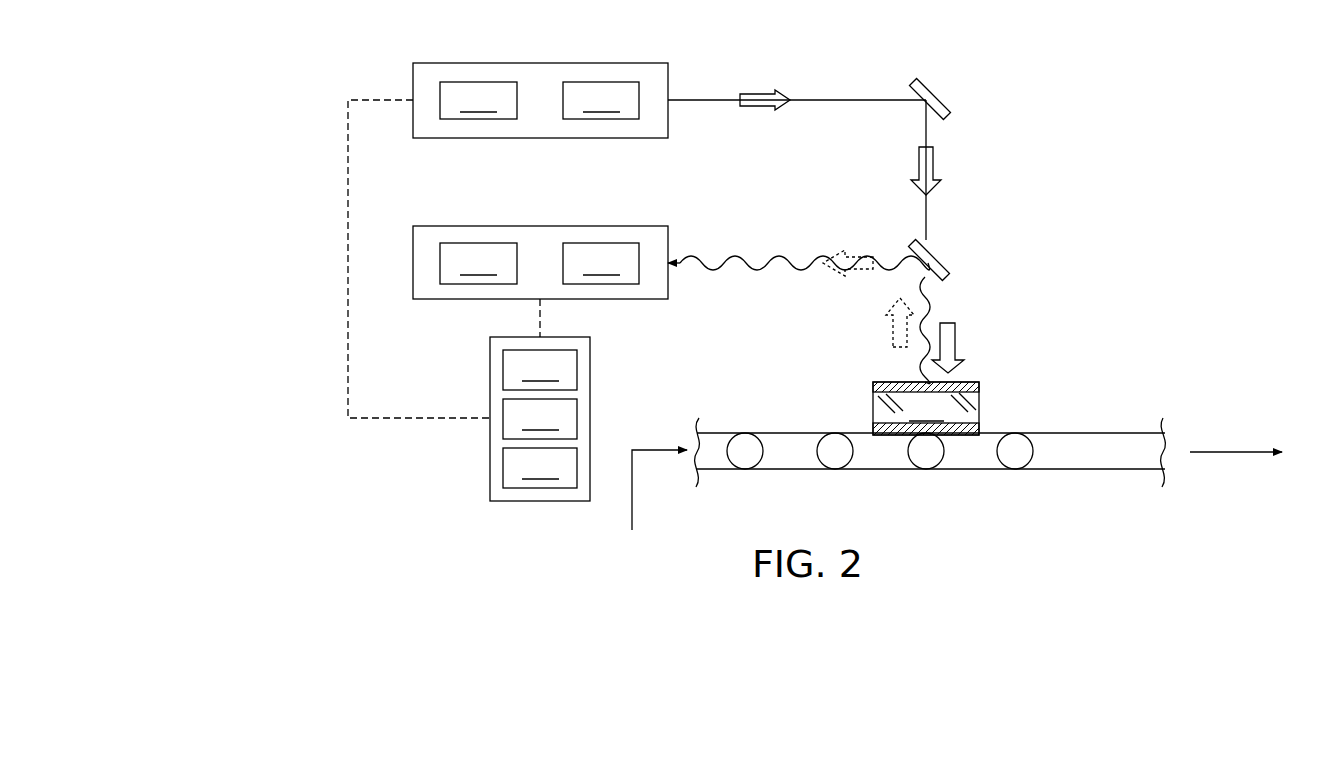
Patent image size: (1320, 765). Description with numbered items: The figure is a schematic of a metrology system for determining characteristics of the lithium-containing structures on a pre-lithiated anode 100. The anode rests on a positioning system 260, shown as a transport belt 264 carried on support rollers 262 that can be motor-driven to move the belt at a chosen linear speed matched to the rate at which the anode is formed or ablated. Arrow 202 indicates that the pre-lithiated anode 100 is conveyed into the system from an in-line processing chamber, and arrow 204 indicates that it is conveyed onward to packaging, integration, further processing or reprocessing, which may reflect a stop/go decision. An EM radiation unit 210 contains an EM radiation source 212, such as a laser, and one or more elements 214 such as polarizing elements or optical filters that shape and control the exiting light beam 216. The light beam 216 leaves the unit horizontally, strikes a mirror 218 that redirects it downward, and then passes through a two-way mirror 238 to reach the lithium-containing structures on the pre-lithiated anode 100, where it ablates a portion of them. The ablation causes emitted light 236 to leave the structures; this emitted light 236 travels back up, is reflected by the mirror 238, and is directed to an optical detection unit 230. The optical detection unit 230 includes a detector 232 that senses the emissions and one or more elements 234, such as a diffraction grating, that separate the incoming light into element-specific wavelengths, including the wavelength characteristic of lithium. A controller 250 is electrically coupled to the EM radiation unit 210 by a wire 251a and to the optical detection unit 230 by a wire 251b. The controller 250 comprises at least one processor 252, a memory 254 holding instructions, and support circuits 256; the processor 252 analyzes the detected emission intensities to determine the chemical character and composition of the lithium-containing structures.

The pre-lithiated anode 100 is at (926, 408).
The arrow 202 is at (632, 498).
The arrow 204 is at (1240, 450).
The EM radiation unit 210 is at (538, 63).
The EM radiation source 212 is at (478, 100).
The elements 214 is at (601, 100).
The light beam 216 is at (758, 93).
The mirror 218 is at (932, 86).
The optical detection unit 230 is at (560, 226).
The detector 232 is at (478, 263).
The elements 234 is at (601, 263).
The emitted light 236 is at (855, 252).
The mirror 238 is at (940, 256).
The controller 250 is at (490, 358).
The wire 251a is at (348, 318).
The wire 251b is at (540, 312).
The processor 252 is at (540, 370).
The memory 254 is at (540, 419).
The support circuits 256 is at (540, 468).
The positioning system 260 is at (955, 442).
The support rollers 262 is at (752, 453).
The transport belt 264 is at (1045, 433).